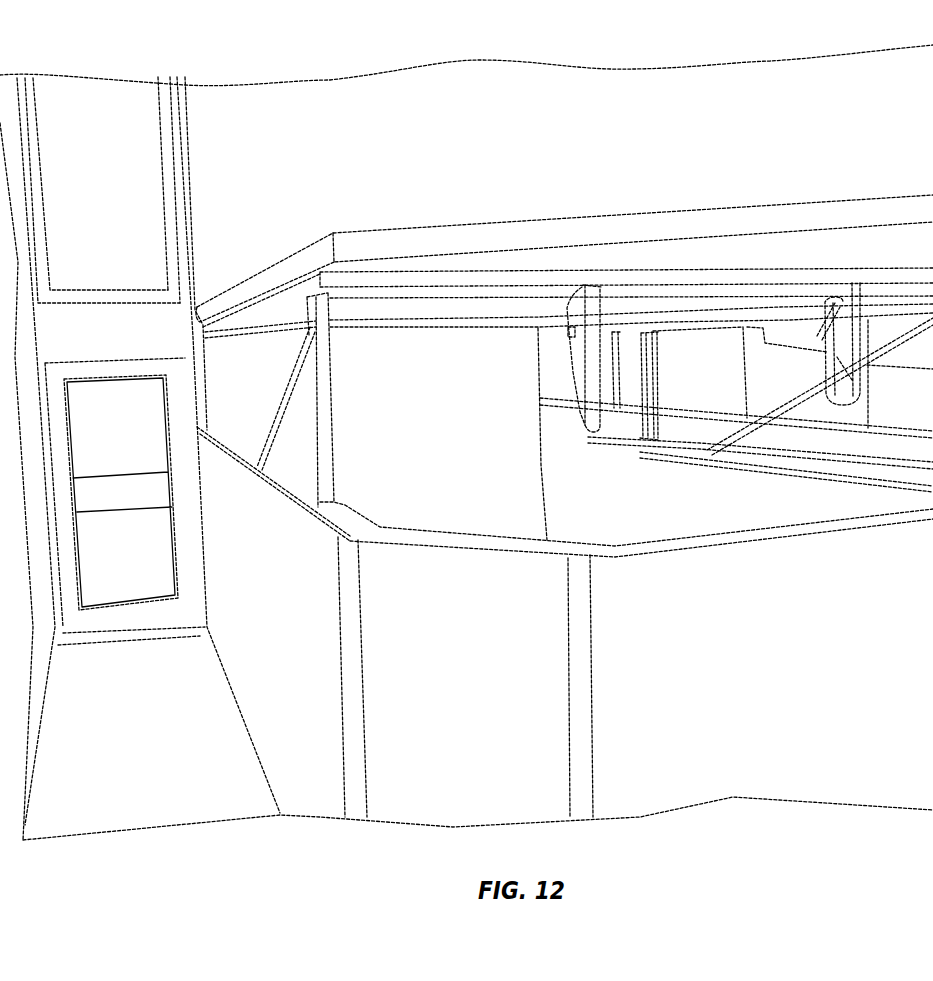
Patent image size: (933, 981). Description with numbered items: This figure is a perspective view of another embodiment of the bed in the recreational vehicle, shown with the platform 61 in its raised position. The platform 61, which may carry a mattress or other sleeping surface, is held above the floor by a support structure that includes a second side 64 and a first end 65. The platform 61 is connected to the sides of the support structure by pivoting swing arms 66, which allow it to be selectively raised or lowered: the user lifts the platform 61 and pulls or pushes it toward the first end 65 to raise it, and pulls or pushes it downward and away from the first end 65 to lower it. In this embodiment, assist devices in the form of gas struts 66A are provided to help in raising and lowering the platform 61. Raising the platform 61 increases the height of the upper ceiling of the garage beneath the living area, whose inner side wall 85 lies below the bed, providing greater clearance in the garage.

The platform 61 is at (542, 277).
The second side 64 is at (275, 516).
The first end 65 is at (673, 600).
The swing arm 66 is at (198, 385).
The gas strut 66A is at (297, 383).
The inner side wall 85 is at (718, 511).